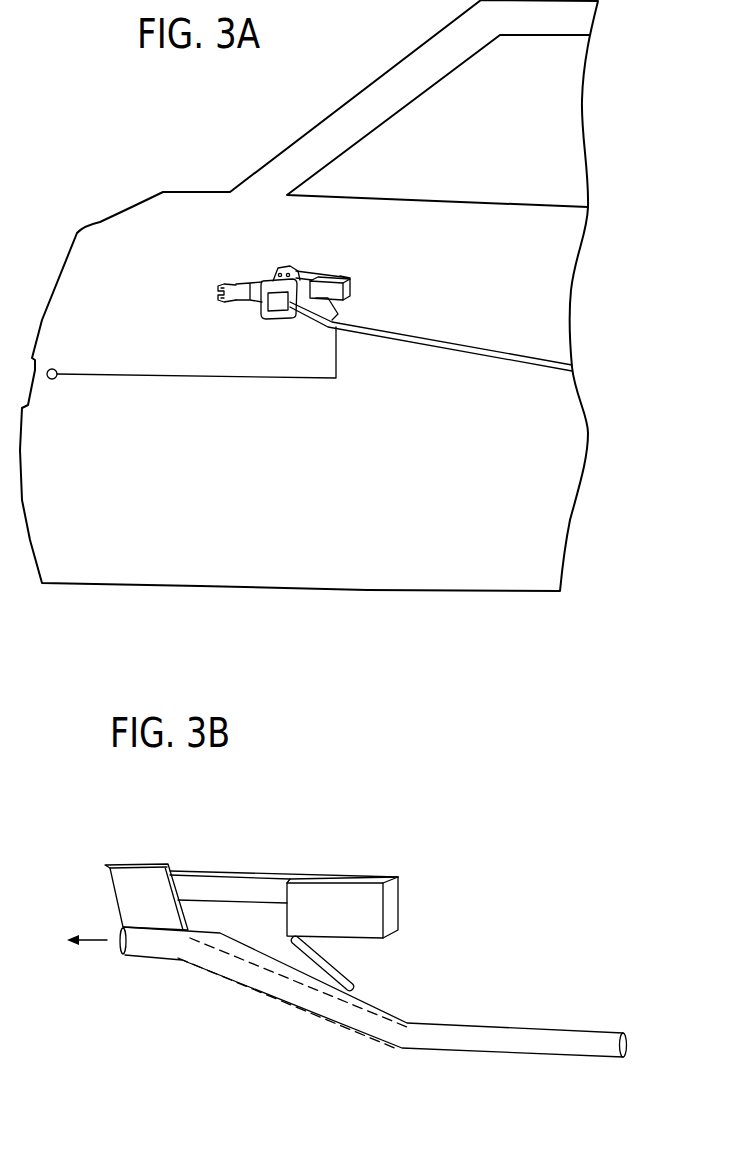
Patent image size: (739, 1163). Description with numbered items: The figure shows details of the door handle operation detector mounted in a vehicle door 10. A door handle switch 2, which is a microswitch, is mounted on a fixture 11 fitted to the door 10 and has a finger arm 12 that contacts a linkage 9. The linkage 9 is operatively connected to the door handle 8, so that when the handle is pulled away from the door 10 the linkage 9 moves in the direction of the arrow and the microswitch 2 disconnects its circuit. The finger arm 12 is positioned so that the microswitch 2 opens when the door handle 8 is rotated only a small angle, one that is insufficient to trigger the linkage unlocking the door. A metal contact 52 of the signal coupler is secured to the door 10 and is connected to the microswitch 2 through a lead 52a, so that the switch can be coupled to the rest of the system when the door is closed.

In FIG. 3A, the door handle switch 2 is at (340, 283).
In FIG. 3B, the door handle switch 2 is at (377, 892).
In FIG. 3A, the door handle 8 is at (273, 287).
In FIG. 3A, the linkage 9 is at (505, 357).
In FIG. 3B, the linkage 9 is at (537, 1030).
In FIG. 3A, the door 10 is at (566, 273).
In FIG. 3A, the fixture 11 is at (305, 277).
In FIG. 3B, the fixture 11 is at (233, 882).
In FIG. 3B, the finger arm 12 is at (348, 975).
In FIG. 3A, the metal contact 52 is at (56, 368).
In FIG. 3A, the lead 52a is at (148, 375).